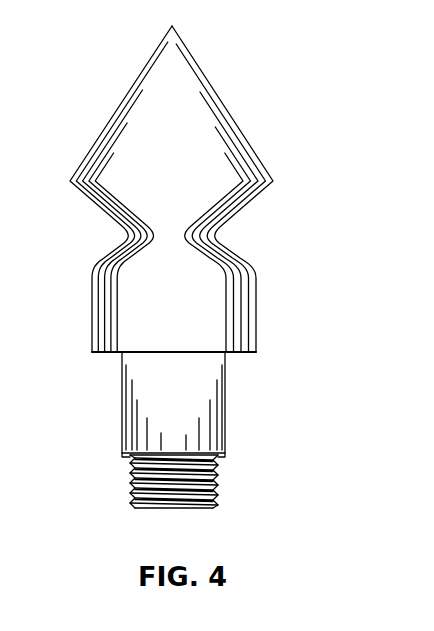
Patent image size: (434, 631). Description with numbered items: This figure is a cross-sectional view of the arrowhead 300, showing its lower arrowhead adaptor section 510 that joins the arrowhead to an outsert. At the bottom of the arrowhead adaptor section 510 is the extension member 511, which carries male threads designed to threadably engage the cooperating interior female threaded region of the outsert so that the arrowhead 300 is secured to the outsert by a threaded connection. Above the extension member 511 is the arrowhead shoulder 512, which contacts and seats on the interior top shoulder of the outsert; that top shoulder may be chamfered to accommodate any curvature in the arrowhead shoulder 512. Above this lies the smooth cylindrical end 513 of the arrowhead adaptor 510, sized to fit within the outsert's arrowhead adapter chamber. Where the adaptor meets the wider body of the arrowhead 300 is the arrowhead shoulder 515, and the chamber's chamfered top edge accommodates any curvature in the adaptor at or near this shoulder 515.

The arrowhead 300 is at (272, 163).
The arrowhead adaptor section 510 is at (208, 390).
The extension member 511 is at (132, 488).
The arrowhead shoulder 512 is at (132, 455).
The smooth cylindrical end 513 is at (122, 393).
The arrowhead shoulder 515 is at (115, 355).